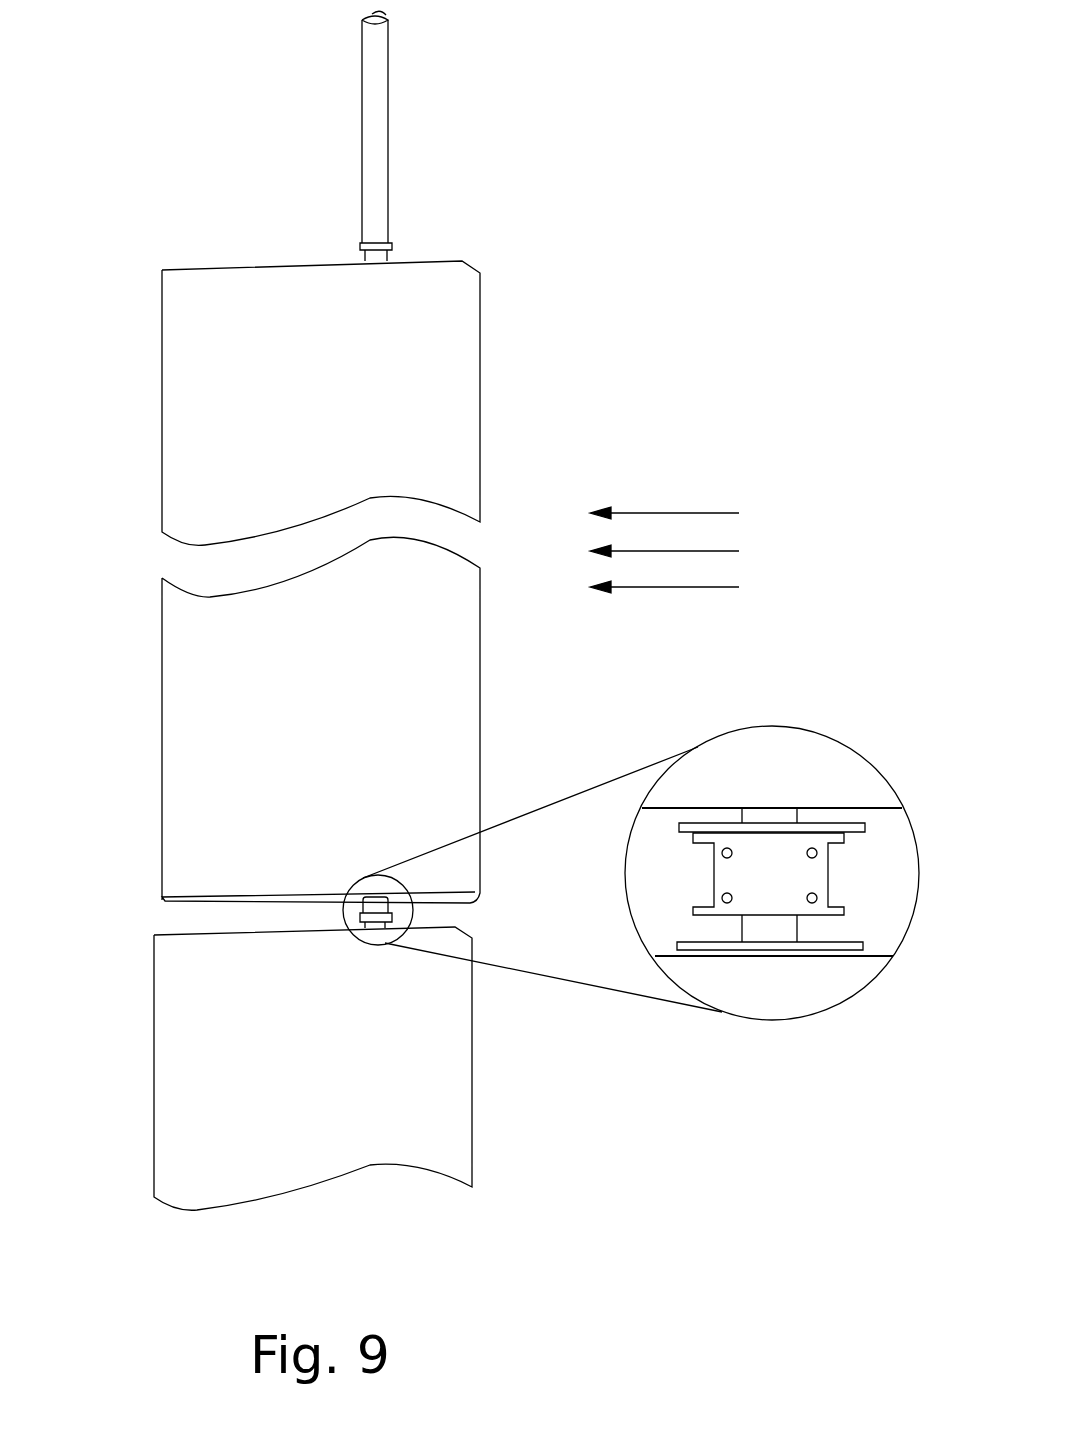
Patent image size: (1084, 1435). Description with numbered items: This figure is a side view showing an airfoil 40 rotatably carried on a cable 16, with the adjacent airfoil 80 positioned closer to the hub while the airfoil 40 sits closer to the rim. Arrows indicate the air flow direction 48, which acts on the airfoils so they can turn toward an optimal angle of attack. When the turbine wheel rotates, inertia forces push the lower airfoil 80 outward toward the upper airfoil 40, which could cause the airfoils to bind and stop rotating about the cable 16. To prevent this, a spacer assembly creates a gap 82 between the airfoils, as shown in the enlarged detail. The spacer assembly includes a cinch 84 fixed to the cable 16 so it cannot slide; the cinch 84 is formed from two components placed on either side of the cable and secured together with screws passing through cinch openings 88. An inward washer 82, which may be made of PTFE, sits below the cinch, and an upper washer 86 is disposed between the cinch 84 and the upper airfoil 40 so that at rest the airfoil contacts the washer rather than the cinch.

The cable 16 is at (388, 160).
The airfoil 40 is at (480, 392).
The air flow direction 48 is at (658, 590).
The adjacent airfoil 80 is at (140, 913).
The inward washer 82 is at (863, 947).
The cinch 84 is at (358, 918).
The upper washer 86 is at (865, 827).
The cinch openings 88 is at (722, 857).